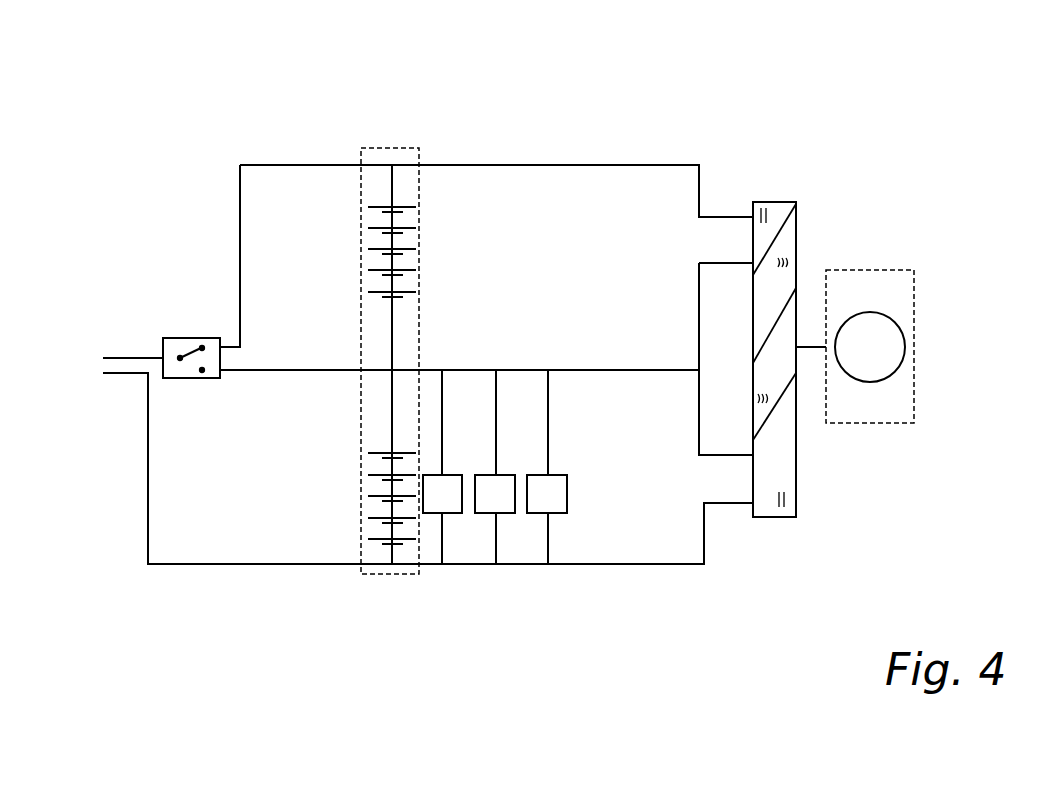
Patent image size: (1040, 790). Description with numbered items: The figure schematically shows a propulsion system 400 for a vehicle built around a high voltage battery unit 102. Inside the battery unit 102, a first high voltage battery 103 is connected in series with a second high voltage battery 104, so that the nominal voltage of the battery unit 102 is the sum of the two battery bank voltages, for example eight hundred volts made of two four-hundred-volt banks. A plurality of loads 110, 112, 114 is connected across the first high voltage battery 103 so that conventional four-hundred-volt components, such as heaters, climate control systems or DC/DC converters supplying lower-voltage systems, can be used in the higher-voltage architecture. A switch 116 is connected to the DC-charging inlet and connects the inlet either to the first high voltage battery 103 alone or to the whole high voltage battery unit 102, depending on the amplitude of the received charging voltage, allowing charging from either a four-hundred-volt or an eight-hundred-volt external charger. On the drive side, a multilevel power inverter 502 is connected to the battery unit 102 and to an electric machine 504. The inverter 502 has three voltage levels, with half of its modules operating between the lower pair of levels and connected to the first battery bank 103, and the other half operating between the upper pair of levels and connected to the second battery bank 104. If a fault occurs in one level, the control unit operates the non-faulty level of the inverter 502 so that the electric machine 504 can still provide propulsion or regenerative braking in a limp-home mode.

The propulsion system 400 is at (883, 127).
The high voltage battery unit 102 is at (402, 149).
The first high voltage battery 103 is at (388, 501).
The second high voltage battery 104 is at (394, 255).
The load 110 is at (453, 473).
The load 112 is at (508, 473).
The load 114 is at (563, 473).
The switch 116 is at (183, 337).
The multilevel power inverter 502 is at (757, 202).
The electric machine 504 is at (877, 312).